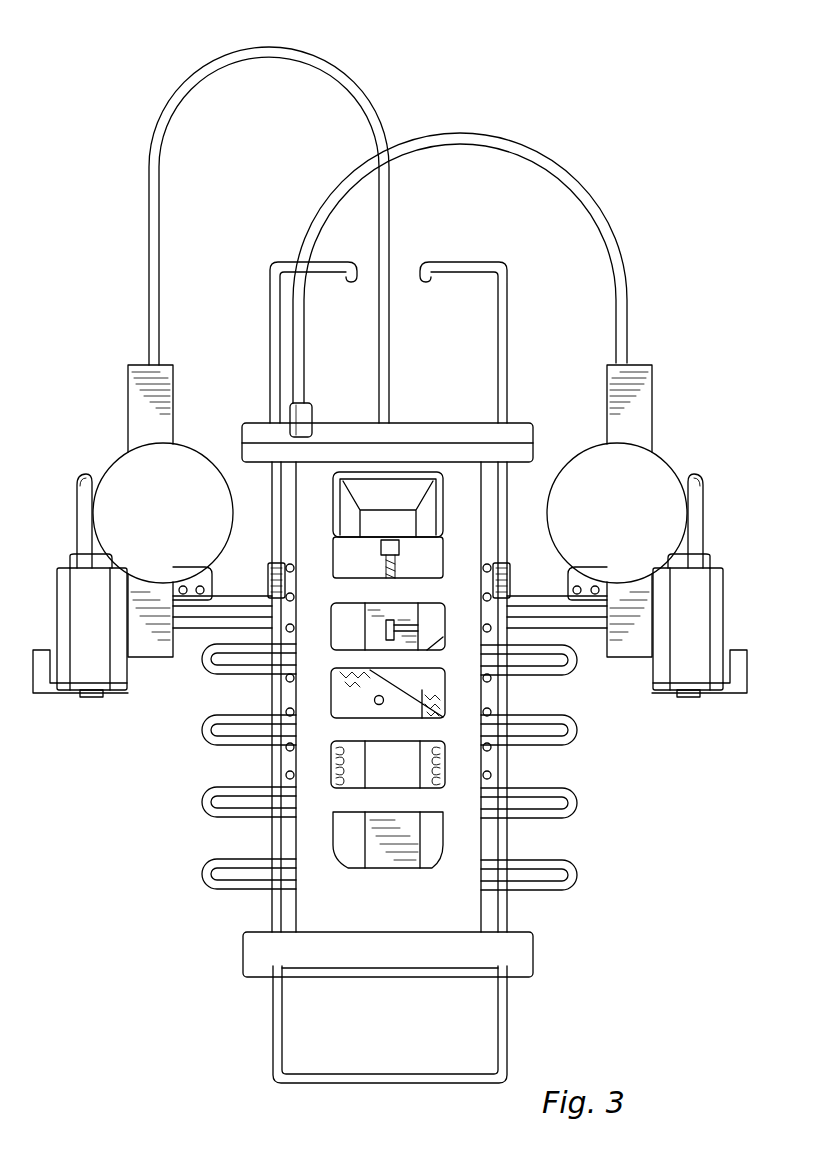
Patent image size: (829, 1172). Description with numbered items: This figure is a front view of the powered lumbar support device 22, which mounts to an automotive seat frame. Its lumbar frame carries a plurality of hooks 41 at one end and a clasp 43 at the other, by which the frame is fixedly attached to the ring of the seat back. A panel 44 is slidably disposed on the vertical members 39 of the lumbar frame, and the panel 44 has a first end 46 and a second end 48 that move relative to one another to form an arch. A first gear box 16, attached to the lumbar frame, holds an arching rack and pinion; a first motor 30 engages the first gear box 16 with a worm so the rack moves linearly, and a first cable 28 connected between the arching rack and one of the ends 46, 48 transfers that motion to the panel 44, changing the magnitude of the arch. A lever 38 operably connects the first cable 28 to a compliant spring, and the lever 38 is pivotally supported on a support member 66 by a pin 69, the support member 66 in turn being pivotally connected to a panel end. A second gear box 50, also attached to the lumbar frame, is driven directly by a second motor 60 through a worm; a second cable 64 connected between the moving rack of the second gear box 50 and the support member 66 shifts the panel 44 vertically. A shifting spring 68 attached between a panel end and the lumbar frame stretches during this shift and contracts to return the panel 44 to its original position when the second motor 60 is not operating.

The powered lumbar support device 22 is at (137, 88).
The second cable 64 is at (153, 225).
The first cable 28 is at (630, 278).
The hooks 41 is at (270, 262).
The vertical members 39 is at (508, 318).
The first end 46 is at (533, 418).
The second gear box 50 is at (135, 423).
The first gear box 16 is at (642, 440).
The second motor 60 is at (57, 592).
The first motor 30 is at (714, 592).
The lever 38 is at (342, 678).
The pin 69 is at (375, 700).
The shifting spring 68 is at (446, 758).
The support member 66 is at (398, 858).
The panel 44 is at (238, 874).
The second end 48 is at (265, 962).
The clasp 43 is at (508, 1018).